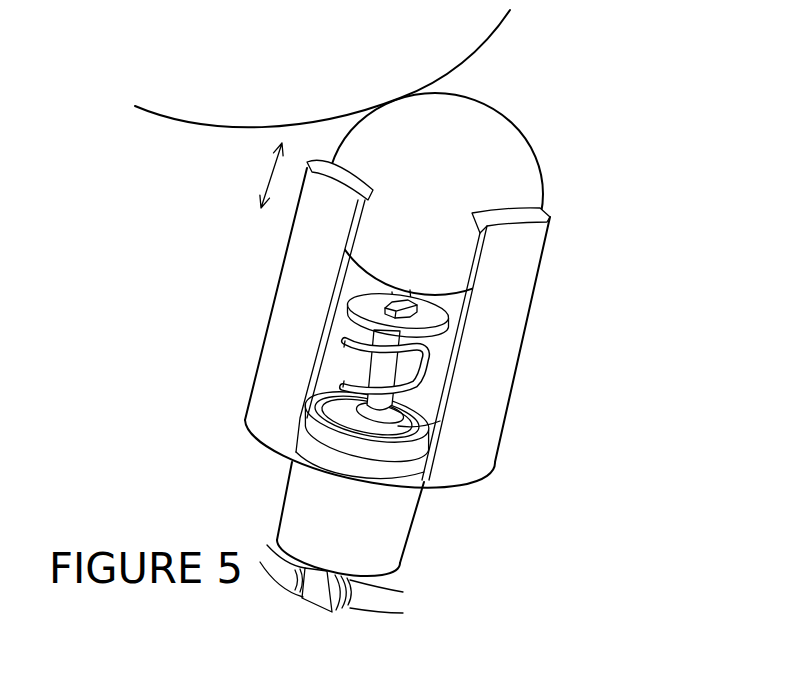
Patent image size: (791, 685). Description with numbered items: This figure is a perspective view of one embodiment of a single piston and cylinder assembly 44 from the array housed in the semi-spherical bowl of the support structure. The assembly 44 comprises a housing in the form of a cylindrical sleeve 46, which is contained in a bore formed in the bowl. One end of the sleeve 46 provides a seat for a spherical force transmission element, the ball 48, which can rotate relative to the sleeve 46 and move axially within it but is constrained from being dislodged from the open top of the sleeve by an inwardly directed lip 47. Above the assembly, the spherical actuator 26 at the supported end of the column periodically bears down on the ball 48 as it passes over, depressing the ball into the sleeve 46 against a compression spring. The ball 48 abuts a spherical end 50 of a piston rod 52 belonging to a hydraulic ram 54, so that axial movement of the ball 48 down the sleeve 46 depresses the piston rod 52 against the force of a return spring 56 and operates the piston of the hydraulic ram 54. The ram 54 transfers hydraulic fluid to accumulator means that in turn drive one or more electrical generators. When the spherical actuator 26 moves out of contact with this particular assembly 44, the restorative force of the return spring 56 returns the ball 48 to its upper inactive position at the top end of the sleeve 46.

The spherical actuator 26 is at (284, 119).
The piston and cylinder assembly 44 is at (243, 303).
The cylindrical sleeve 46 is at (313, 337).
The inwardly directed lip 47 is at (538, 213).
The ball 48 is at (434, 181).
The spherical end 50 is at (410, 303).
The piston rod 52 is at (392, 352).
The hydraulic ram 54 is at (358, 531).
The return spring 56 is at (345, 395).